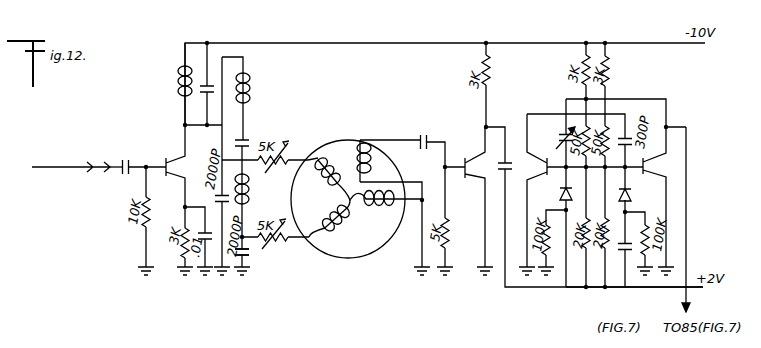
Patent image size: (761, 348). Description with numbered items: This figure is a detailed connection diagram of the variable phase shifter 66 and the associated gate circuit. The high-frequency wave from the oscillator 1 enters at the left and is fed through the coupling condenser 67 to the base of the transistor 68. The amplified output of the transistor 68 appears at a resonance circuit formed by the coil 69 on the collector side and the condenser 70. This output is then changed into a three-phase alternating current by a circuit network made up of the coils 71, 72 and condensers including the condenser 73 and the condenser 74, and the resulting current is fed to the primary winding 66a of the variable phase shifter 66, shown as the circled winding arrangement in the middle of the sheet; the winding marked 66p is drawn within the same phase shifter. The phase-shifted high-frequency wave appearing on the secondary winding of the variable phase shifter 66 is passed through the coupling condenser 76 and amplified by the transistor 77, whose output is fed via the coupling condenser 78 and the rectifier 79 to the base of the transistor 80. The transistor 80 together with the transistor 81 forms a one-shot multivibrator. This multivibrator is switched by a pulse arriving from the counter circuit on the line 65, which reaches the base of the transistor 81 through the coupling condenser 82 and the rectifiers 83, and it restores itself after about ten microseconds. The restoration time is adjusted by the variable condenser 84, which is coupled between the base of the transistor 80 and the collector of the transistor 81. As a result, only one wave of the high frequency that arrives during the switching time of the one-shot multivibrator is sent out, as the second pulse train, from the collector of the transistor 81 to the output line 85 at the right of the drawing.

The oscillator 1 is at (61, 190).
The line 65 is at (624, 290).
The variable phase shifter 66 is at (360, 258).
The primary winding 66a is at (338, 219).
The transformer primary winding 66p is at (374, 161).
The coupling condenser 67 is at (131, 178).
The transistor 68 is at (165, 158).
The coil 69 is at (180, 64).
The condenser 70 is at (206, 42).
The coil 71 is at (247, 72).
The coil 72 is at (251, 172).
The condenser 73 is at (247, 134).
The condenser 74 is at (247, 252).
The coupling condenser 76 is at (402, 147).
The transistor 77 is at (464, 156).
The coupling condenser 78 is at (508, 160).
The rectifier 79 is at (561, 196).
The transistor 80 is at (554, 178).
The transistor 81 is at (656, 172).
The coupling condenser 82 is at (627, 252).
The rectifiers 83 is at (633, 193).
The variable condenser 84 is at (564, 133).
The line 85 is at (688, 263).